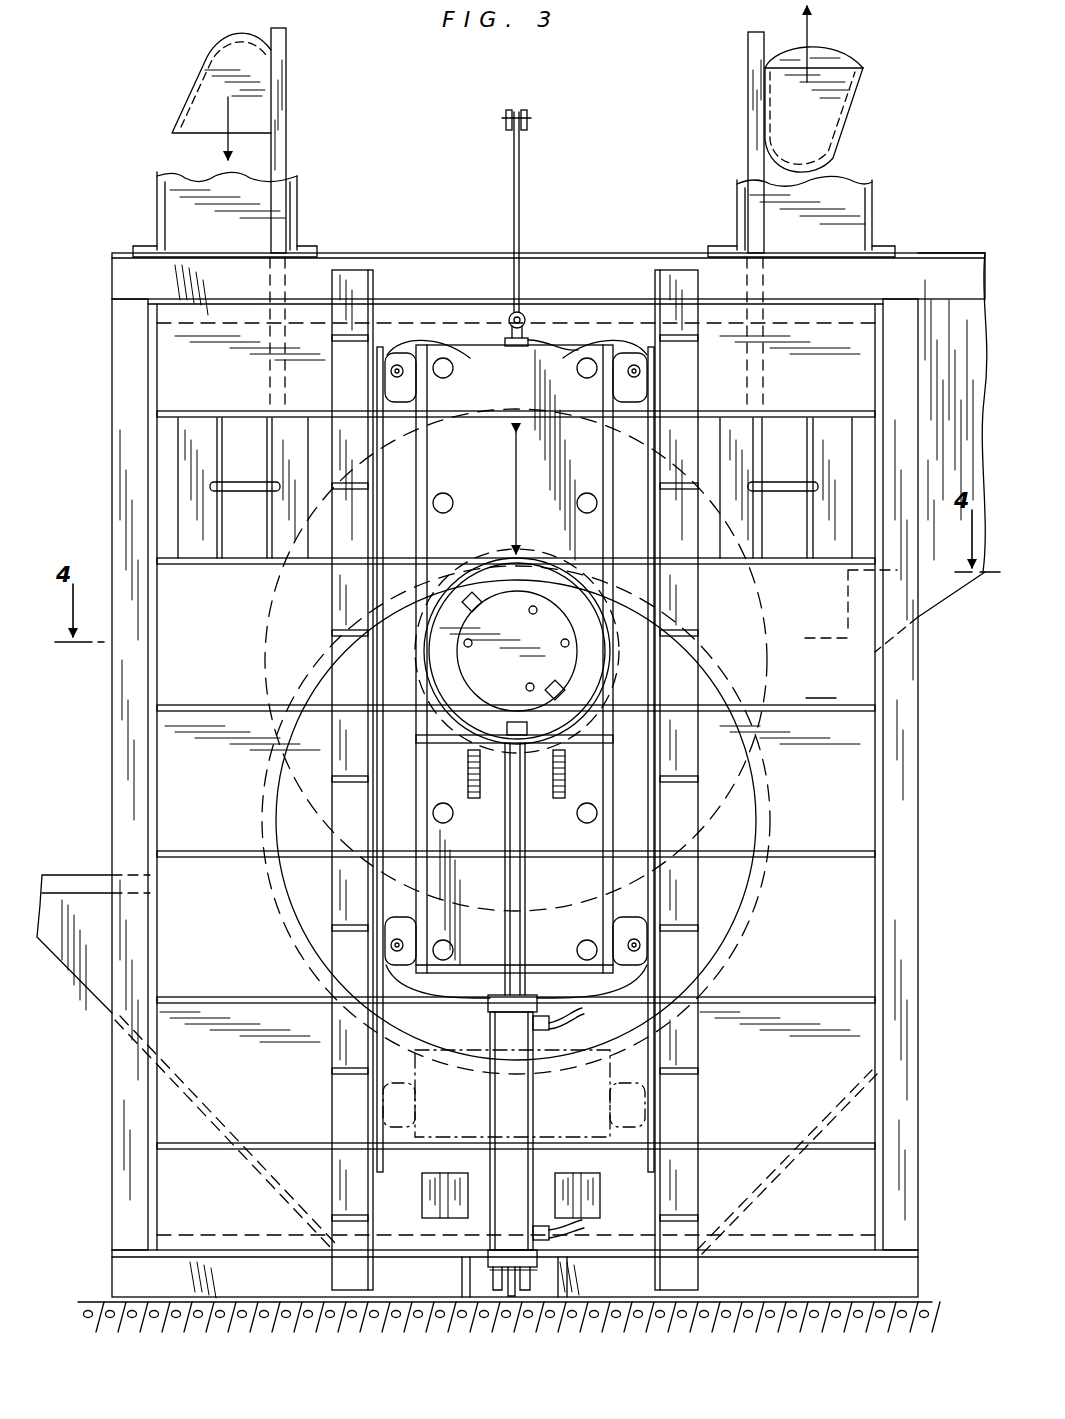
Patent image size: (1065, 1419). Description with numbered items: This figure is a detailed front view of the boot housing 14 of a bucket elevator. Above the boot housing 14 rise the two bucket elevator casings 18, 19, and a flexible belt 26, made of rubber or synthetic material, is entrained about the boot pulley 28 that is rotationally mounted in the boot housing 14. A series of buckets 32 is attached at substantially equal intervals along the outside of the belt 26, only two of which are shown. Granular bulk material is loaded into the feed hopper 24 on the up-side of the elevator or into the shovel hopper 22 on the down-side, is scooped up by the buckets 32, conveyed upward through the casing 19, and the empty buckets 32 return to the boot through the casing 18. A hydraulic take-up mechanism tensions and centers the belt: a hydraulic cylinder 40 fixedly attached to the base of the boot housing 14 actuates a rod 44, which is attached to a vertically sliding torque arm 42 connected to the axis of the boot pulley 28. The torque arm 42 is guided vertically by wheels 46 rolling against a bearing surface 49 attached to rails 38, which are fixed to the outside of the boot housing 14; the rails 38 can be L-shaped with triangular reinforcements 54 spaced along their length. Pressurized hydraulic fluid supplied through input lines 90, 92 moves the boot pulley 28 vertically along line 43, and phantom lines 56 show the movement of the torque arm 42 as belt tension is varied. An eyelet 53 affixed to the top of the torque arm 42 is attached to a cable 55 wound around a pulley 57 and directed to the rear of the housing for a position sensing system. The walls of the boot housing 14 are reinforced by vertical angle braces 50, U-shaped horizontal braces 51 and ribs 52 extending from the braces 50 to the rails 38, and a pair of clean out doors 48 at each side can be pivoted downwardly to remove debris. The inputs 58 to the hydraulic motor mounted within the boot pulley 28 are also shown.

The boot housing 14 is at (553, 751).
The bucket elevator casing 18 is at (157, 203).
The bucket elevator casing 19 is at (872, 202).
The shovel hopper 22 is at (87, 973).
The feed hopper 24 is at (938, 608).
The flexible belt 26 is at (287, 144).
The boot pulley 28 is at (484, 416).
The buckets 32 is at (196, 98).
The rails 38 is at (374, 286).
The hydraulic cylinder 40 is at (526, 1157).
The torque arm 42 is at (440, 540).
The line of vertical movement 43 is at (518, 503).
The rod 44 is at (520, 852).
The wheels 46 is at (548, 356).
The clean out doors 48 is at (272, 1192).
The bearing surface 49 is at (388, 401).
The vertical angle braces 50 is at (122, 750).
The U-shaped horizontal braces 51 is at (452, 272).
The ribs 52 is at (216, 856).
The eyelet 53 is at (526, 324).
The triangular reinforcements 54 is at (345, 1066).
The cable 55 is at (520, 178).
The phantom lines 56 is at (456, 1136).
The pulley 57 is at (528, 114).
The inputs to the hydraulic motor 58 is at (473, 646).
The input line 90 is at (566, 1038).
The input line 92 is at (582, 1236).